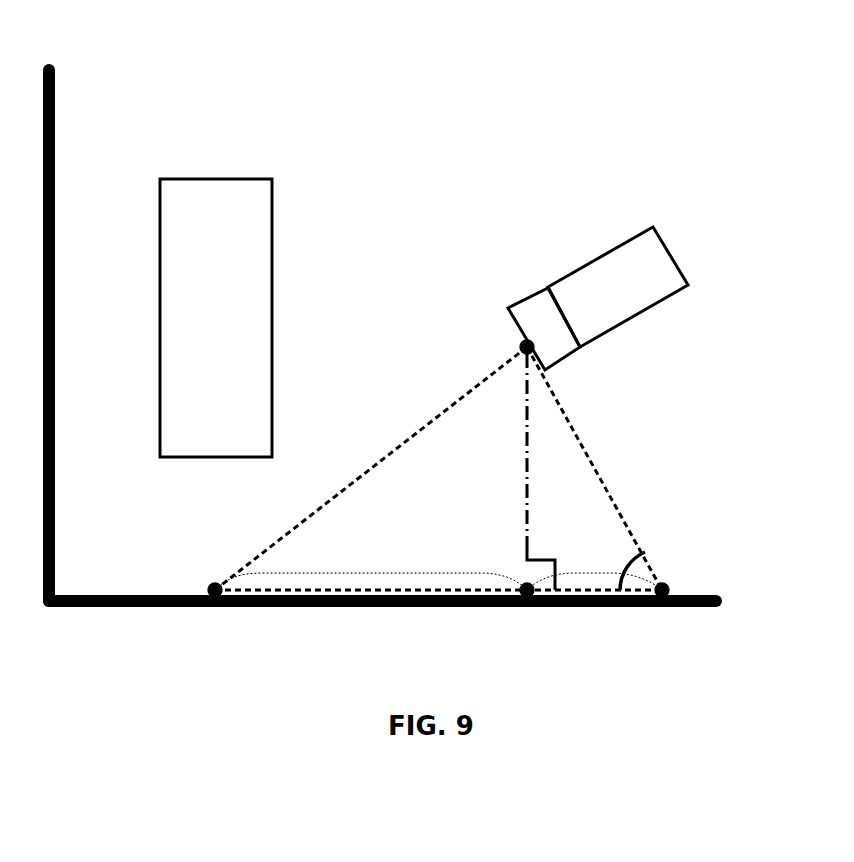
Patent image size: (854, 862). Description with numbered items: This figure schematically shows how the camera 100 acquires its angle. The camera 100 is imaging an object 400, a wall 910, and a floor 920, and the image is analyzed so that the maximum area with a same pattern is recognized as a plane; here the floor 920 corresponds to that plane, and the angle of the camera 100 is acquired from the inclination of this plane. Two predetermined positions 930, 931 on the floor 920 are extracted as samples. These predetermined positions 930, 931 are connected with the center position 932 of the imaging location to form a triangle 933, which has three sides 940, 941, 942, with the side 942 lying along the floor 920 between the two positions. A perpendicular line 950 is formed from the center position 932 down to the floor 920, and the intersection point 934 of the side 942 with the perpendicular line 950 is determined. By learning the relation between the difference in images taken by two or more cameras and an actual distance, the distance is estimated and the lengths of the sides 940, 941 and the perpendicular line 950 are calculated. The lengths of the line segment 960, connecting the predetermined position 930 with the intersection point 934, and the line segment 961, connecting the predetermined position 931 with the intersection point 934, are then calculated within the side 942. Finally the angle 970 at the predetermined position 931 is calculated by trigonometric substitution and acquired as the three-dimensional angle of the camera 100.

The wall 910 is at (58, 68).
The floor 920 is at (686, 596).
The object 400 is at (255, 180).
The camera 100 is at (655, 235).
The center position of the imaging location 932 is at (527, 335).
The triangle 933 is at (520, 343).
The side 940 is at (472, 383).
The side 941 is at (582, 437).
The perpendicular line 950 is at (530, 520).
The predetermined position 930 is at (212, 587).
The intersection point 934 is at (522, 585).
The predetermined position 931 is at (664, 585).
The side 942 is at (422, 590).
The line segment 960 is at (369, 573).
The line segment 961 is at (592, 572).
The angle 970 is at (634, 556).